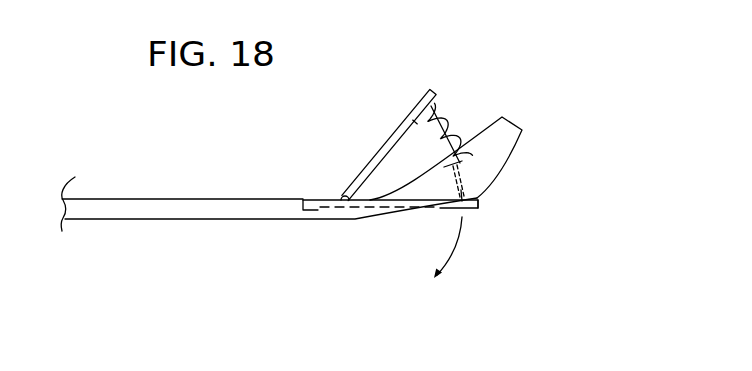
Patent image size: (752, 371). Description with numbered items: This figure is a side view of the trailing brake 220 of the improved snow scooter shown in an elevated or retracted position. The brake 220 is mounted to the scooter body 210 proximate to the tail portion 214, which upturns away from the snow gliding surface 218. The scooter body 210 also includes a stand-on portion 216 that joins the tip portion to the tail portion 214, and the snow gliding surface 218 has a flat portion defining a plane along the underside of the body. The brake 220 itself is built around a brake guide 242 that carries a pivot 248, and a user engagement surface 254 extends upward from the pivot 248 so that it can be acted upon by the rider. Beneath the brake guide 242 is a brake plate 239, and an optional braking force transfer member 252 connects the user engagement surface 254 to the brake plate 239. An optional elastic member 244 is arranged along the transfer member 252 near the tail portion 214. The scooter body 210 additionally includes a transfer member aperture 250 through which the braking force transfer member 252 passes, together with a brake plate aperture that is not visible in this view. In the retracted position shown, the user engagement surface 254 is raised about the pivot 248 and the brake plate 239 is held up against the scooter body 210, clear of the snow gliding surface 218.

The scooter body 210 is at (187, 140).
The tail portion 214 is at (510, 150).
The stand-on portion 216 is at (165, 198).
The snow gliding surface 218 is at (202, 219).
The trailing brake 220 is at (428, 60).
The brake plate 239 is at (478, 213).
The brake guide 242 is at (305, 198).
The elastic member 244 is at (455, 118).
The pivot 248 is at (340, 196).
The transfer member aperture 250 is at (470, 172).
The braking force transfer member 252 is at (474, 199).
The user engagement surface 254 is at (410, 113).